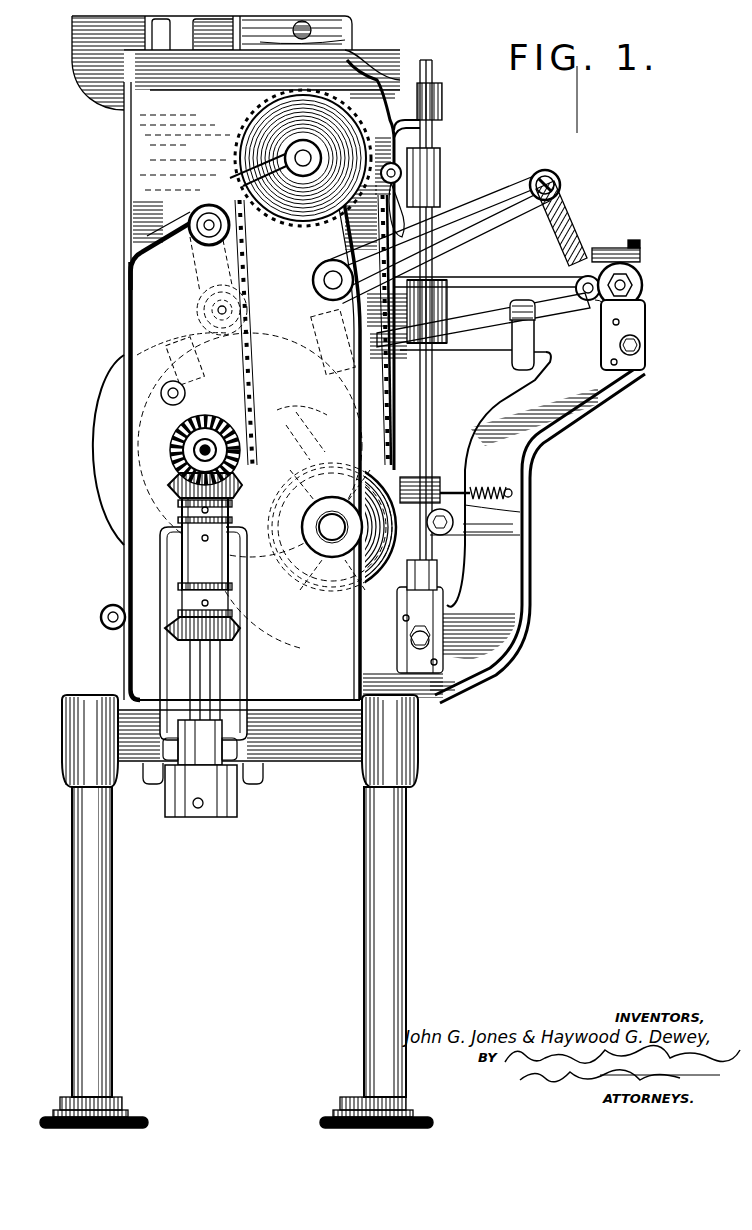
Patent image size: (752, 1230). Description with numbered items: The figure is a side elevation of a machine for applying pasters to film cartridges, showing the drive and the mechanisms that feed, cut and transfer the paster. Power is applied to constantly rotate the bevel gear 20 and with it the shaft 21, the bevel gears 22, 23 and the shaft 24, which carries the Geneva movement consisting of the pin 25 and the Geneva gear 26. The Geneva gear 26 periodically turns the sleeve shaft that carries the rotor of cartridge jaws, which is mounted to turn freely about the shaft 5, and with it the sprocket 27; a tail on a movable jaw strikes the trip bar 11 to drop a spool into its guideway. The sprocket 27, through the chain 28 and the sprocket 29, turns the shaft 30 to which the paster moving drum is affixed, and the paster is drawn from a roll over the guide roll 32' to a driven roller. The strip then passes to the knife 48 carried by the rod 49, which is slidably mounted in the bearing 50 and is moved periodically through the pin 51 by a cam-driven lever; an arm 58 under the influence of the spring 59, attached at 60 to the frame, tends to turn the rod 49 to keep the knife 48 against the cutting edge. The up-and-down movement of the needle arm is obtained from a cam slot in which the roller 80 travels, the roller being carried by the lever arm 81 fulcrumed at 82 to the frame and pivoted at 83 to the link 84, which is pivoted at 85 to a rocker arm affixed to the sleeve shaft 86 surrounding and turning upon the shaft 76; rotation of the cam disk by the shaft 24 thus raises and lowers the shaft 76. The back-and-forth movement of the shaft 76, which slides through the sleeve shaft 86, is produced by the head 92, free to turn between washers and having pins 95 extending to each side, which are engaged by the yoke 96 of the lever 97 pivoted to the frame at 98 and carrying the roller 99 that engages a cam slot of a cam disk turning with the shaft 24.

The shaft 5 is at (332, 527).
The trip bar 11 is at (104, 612).
The bevel gear 20 is at (170, 640).
The shaft 21 is at (193, 667).
The bevel gear 22 is at (165, 503).
The bevel gear 23 is at (177, 492).
The shaft 24 is at (200, 450).
The pin 25 is at (193, 530).
The Geneva gear 26 is at (305, 652).
The sprocket 27 is at (463, 583).
The chain 28 is at (245, 152).
The sprocket 29 is at (367, 143).
The shaft 30 is at (345, 156).
The guide roll 32' is at (307, 31).
The knife 48 is at (440, 198).
The rod 49 is at (434, 70).
The bearing 50 is at (442, 108).
The pin 51 is at (525, 536).
The arm 58 is at (468, 478).
The spring 59 is at (510, 495).
The attachment point 60 is at (520, 512).
The shaft 76 is at (642, 285).
The roller 80 is at (160, 393).
The lever arm 81 is at (138, 445).
The fulcrum 82 is at (325, 270).
The pivot 83 is at (552, 183).
The link 84 is at (570, 225).
The pivot 85 is at (572, 281).
The sleeve shaft 86 is at (590, 312).
The head 92 is at (645, 293).
The pins 95 is at (620, 250).
The yoke 96 is at (640, 350).
The lever 97 is at (480, 307).
The pivot 98 is at (400, 402).
The roller 99 is at (126, 352).